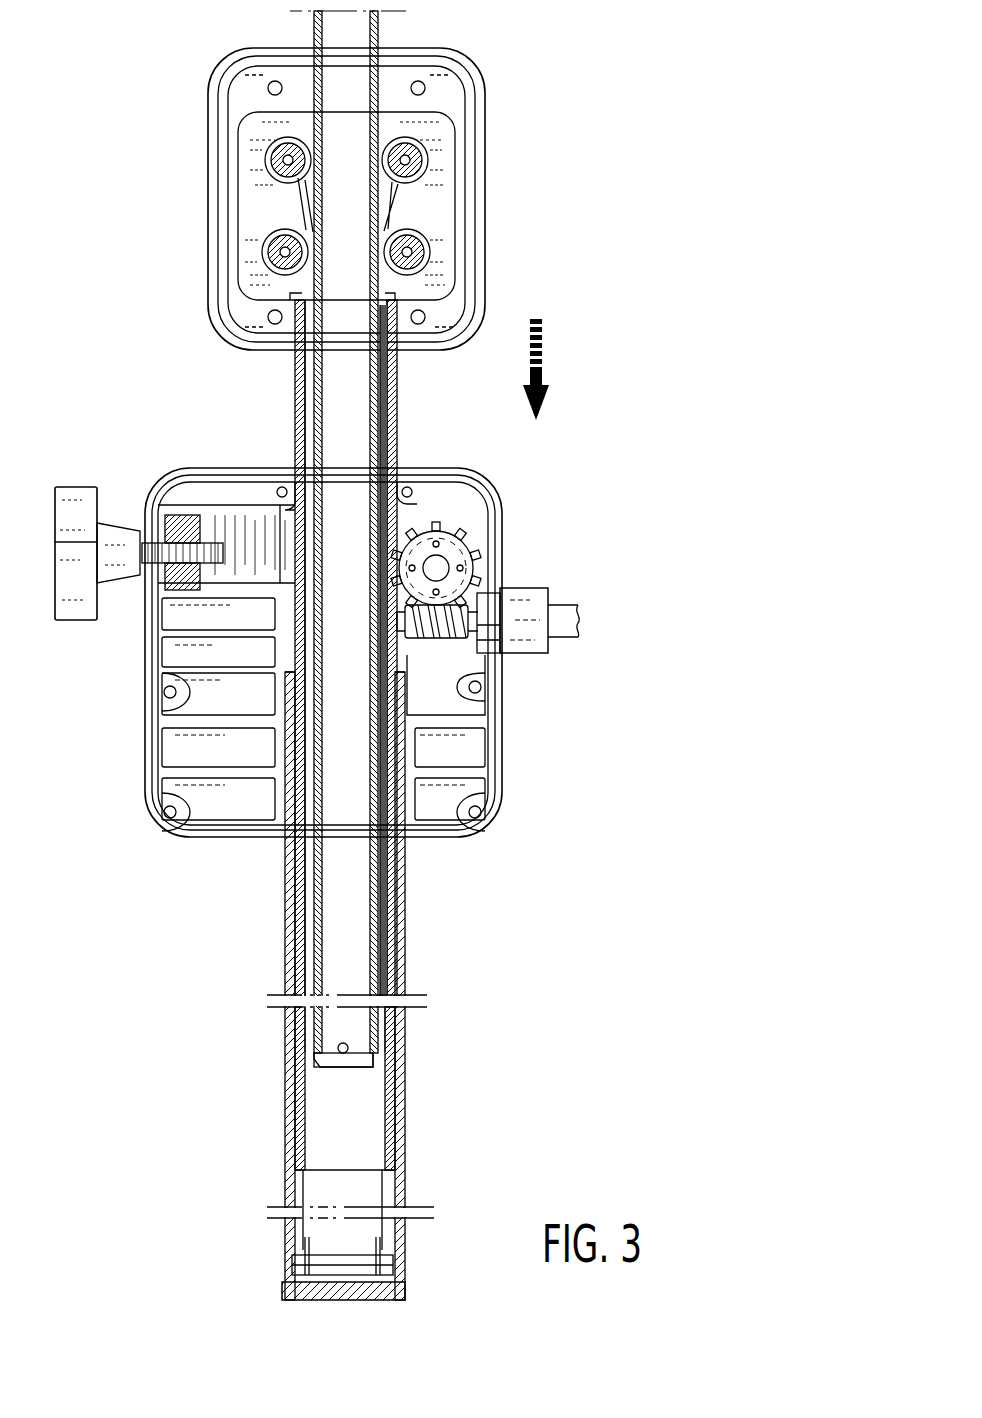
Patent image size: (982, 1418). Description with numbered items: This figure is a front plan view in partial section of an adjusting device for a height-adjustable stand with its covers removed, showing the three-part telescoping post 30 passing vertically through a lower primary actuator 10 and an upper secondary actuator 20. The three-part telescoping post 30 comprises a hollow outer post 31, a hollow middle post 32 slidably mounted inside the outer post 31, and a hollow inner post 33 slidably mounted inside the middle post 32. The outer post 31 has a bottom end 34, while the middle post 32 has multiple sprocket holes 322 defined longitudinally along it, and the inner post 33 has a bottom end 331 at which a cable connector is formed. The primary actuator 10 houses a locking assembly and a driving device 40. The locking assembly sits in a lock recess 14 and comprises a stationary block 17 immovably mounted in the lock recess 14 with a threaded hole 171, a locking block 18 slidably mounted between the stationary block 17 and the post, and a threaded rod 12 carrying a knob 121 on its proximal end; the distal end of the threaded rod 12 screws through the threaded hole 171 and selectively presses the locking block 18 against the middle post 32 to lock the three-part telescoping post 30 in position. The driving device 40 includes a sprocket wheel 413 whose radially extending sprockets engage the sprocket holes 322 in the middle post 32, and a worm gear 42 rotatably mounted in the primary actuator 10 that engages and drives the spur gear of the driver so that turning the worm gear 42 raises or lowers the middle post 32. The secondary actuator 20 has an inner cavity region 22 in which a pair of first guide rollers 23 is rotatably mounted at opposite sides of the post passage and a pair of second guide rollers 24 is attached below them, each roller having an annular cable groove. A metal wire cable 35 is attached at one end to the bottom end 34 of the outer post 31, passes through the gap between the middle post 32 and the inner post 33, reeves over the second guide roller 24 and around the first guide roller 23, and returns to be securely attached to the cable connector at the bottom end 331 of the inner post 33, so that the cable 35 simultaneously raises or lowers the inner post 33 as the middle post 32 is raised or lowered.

The primary actuator 10 is at (505, 478).
The threaded rod 12 is at (158, 548).
The knob 121 is at (84, 487).
The lock recess 14 is at (276, 505).
The stationary block 17 is at (183, 515).
The threaded hole 171 is at (185, 578).
The locking block 18 is at (253, 530).
The secondary actuator 20 is at (501, 199).
The housing recess 22 is at (378, 88).
The first guide rollers 23 is at (423, 157).
The second guide rollers 24 is at (265, 253).
The three-part telescoping post 30 is at (424, 1054).
The outer post 31 is at (405, 881).
The middle post 32 is at (397, 373).
The sprocket holes 322 is at (397, 413).
The inner post 33 is at (378, 35).
The bottom end of inner post 331 is at (318, 1058).
The bottom end of outer post 34 is at (336, 1271).
The cable 35 is at (390, 1119).
The driving device 40 is at (546, 602).
The sprocket wheel 413 is at (451, 522).
The worm gear 42 is at (432, 644).